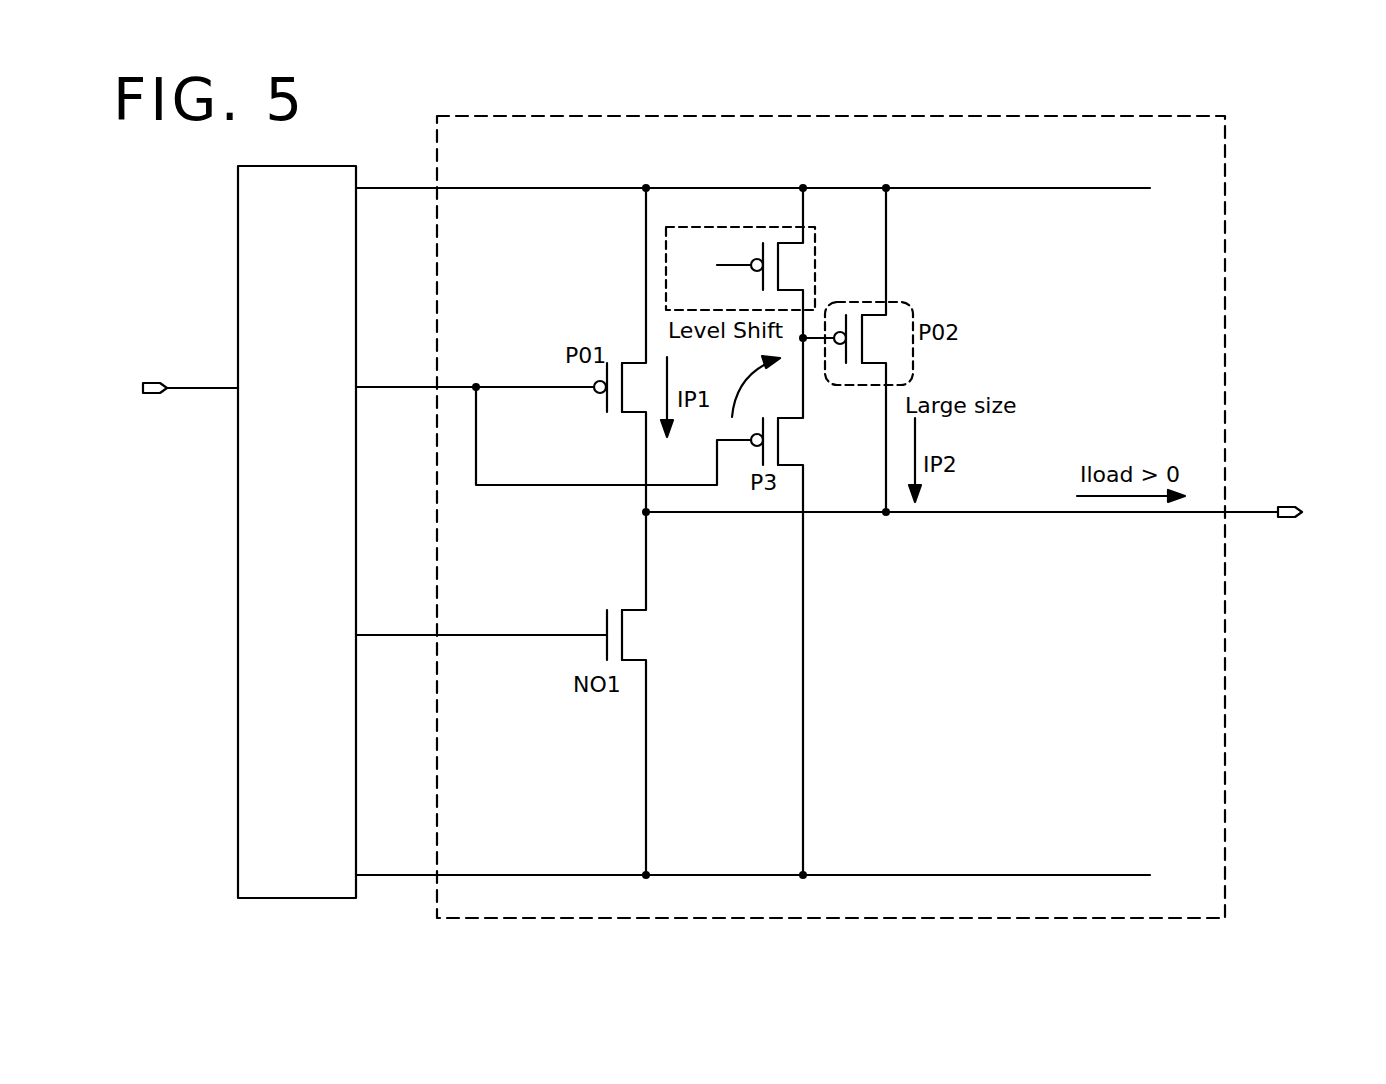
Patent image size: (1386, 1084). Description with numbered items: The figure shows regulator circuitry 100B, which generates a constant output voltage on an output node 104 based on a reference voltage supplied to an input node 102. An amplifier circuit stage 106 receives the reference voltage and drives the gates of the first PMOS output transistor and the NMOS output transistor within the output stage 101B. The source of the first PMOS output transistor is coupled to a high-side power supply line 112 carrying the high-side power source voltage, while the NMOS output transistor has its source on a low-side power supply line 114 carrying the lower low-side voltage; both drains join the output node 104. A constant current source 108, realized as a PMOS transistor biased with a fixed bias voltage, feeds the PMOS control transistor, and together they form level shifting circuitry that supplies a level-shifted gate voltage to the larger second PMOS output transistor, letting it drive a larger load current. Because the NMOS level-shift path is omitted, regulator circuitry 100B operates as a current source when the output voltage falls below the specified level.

The regulator circuitry 100B is at (1242, 163).
The output stage 101B is at (1158, 271).
The input node 102 is at (145, 382).
The output node 104 is at (1293, 505).
The amplifier circuit stage 106 is at (318, 600).
The constant current source 108 is at (818, 235).
The high-side power supply line 112 is at (727, 185).
The low-side power supply line 114 is at (727, 874).